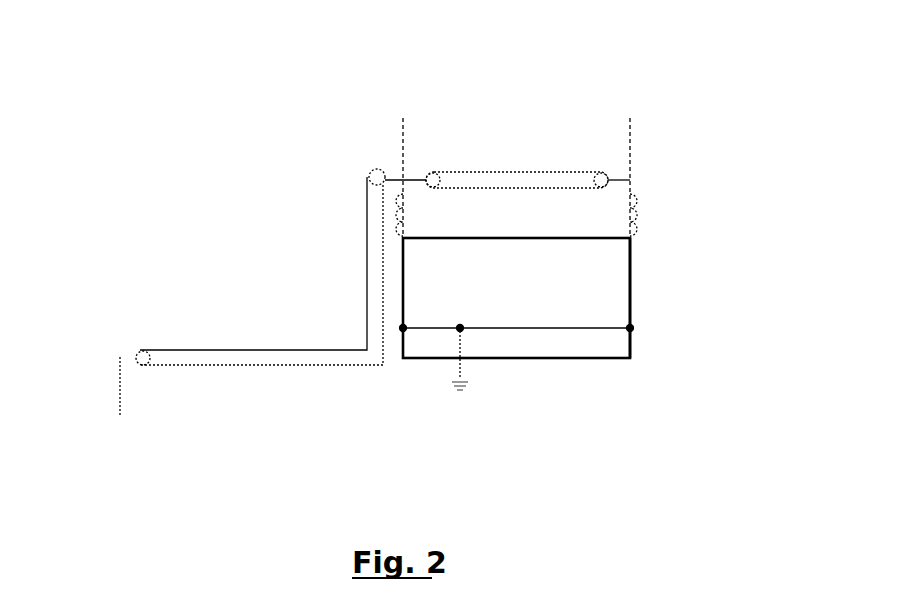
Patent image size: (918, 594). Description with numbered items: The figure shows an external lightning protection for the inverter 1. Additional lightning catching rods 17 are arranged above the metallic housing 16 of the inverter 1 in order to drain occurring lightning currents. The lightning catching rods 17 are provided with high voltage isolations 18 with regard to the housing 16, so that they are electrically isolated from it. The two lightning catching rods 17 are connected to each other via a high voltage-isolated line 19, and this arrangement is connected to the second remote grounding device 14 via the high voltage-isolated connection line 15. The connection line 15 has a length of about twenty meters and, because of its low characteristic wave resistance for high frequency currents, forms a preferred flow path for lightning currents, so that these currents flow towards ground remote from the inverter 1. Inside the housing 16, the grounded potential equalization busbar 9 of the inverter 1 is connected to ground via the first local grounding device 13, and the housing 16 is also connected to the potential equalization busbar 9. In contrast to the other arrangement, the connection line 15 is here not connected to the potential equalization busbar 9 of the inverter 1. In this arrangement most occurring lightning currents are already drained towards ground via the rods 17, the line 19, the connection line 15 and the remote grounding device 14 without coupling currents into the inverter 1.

The inverter 1 is at (635, 247).
The potential equalization busbar 9 is at (603, 330).
The first local grounding device 13 is at (468, 371).
The second remote grounding device 14 is at (113, 389).
The high voltage-isolated connection line 15 is at (297, 365).
The metallic housing 16 is at (630, 288).
The lightning catching rods 17 is at (403, 145).
The high voltage isolations 18 is at (405, 210).
The high voltage-isolated line 19 is at (527, 170).